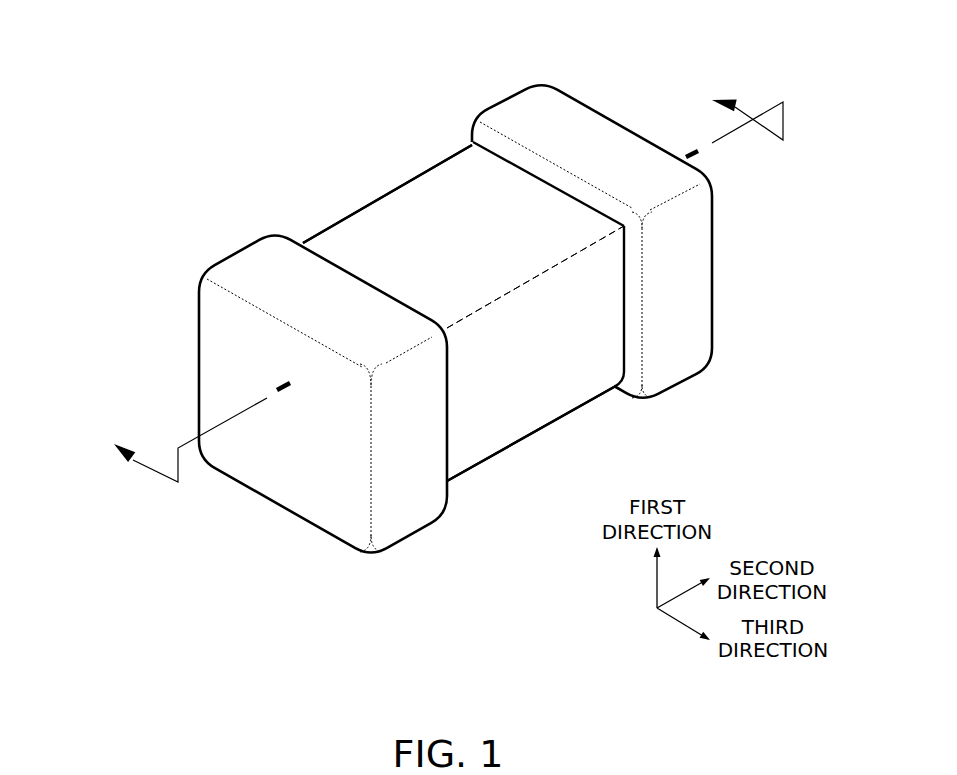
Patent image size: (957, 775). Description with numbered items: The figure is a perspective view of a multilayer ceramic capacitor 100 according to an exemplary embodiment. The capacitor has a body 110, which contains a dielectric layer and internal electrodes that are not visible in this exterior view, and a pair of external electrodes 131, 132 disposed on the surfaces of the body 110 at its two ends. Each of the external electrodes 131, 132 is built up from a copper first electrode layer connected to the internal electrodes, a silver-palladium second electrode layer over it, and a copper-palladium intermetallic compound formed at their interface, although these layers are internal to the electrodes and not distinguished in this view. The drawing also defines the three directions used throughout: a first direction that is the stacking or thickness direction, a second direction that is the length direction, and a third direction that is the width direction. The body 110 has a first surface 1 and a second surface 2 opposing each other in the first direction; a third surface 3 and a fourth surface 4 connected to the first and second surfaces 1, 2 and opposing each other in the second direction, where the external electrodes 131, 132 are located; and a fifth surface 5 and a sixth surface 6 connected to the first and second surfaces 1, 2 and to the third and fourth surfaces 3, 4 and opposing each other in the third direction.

The multilayer ceramic capacitor 100 is at (212, 89).
The body 110 is at (333, 250).
The external electrode 131 is at (263, 262).
The external electrode 132 is at (513, 118).
The first surface 1 is at (505, 400).
The second surface 2 is at (472, 198).
The third surface 3 is at (293, 447).
The fourth surface 4 is at (663, 256).
The fifth surface 5 is at (550, 376).
The sixth surface 6 is at (418, 218).